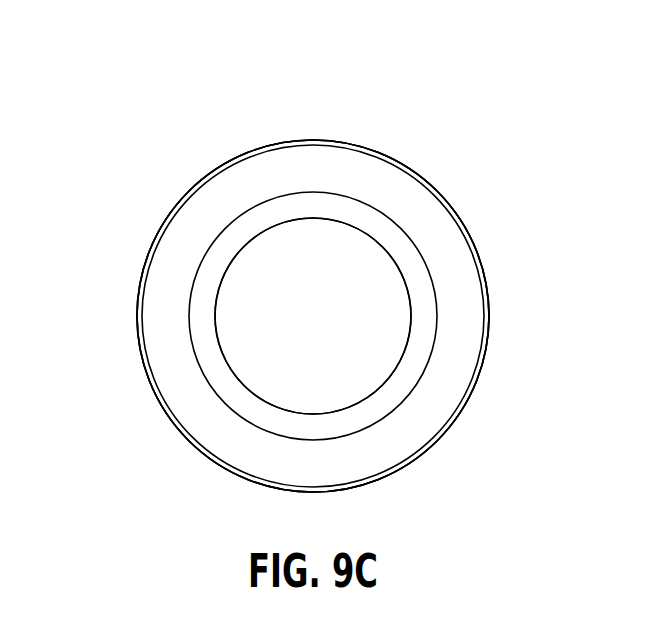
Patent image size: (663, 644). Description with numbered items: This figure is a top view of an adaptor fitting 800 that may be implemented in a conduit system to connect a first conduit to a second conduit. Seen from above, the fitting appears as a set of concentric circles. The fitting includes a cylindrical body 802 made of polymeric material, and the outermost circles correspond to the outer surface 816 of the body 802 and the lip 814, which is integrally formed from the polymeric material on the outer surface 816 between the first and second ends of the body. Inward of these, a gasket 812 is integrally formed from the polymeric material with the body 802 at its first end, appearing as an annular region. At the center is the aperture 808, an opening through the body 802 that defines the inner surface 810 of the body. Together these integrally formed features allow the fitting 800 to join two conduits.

The adaptor fitting 800 is at (450, 105).
The cylindrical body 802 is at (250, 140).
The aperture 808 is at (270, 345).
The inner surface 810 is at (395, 366).
The gasket 812 is at (424, 328).
The lip 814 is at (158, 399).
The outer surface 816 is at (134, 300).